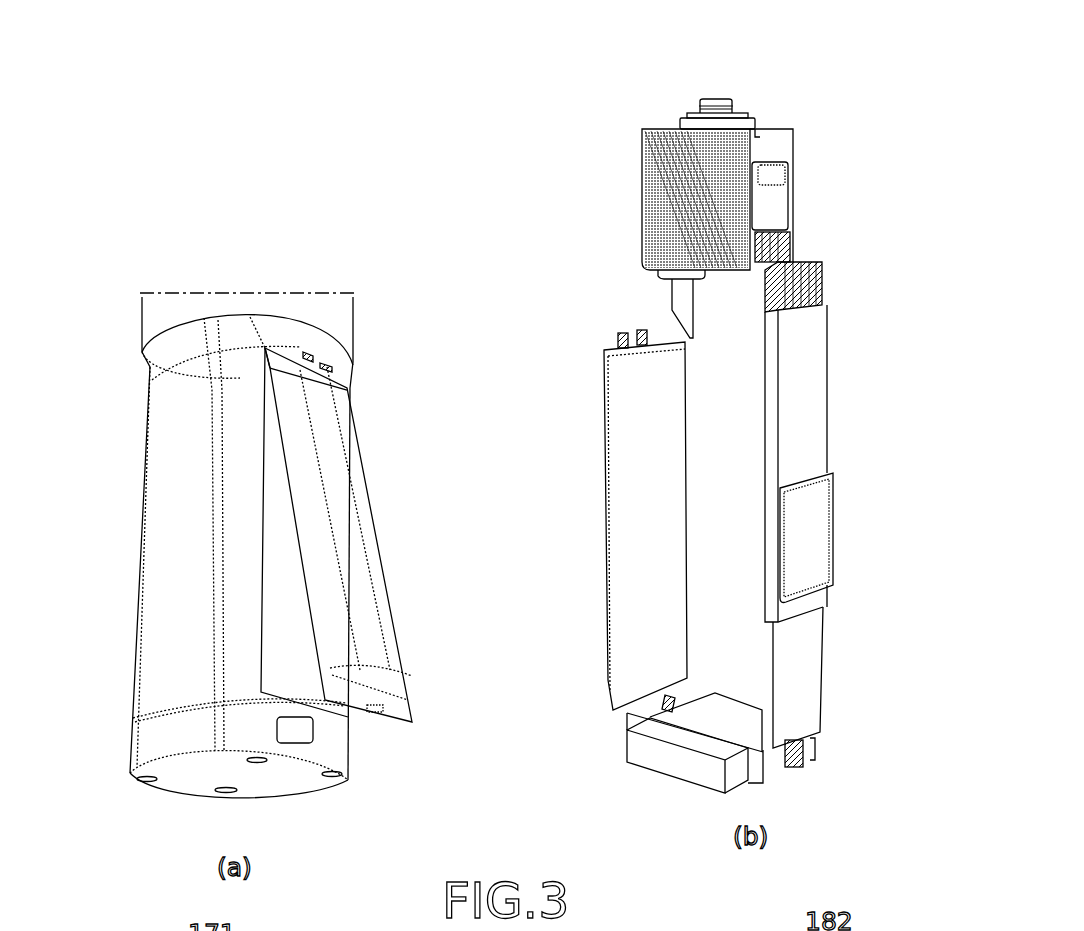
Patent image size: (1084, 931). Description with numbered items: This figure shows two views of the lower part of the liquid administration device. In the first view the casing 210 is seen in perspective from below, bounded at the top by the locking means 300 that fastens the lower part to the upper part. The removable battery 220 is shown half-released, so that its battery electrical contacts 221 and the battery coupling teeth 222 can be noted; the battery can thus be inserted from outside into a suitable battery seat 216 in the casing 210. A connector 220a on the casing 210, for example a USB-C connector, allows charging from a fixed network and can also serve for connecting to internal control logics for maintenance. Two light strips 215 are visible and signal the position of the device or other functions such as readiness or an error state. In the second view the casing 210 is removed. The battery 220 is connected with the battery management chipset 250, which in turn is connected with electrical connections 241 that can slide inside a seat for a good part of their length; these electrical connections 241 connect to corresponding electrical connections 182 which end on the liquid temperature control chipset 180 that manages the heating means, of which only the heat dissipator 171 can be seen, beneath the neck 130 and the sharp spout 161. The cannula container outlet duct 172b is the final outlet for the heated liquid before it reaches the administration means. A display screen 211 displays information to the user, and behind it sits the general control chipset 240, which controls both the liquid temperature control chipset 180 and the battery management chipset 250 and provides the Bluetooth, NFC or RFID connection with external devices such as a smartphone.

The neck of the upper part 130 is at (633, 196).
The sharp spout 161 is at (686, 303).
The heat dissipator 171 is at (658, 128).
The cannula container outlet duct 172b is at (735, 103).
The liquid temperature control chipset 180 is at (773, 205).
The electrical connections from the chipset 182 is at (792, 247).
The casing 210 is at (136, 455).
The display screen 211 is at (812, 535).
The light strips 215 is at (218, 560).
The battery seat 216 is at (283, 640).
The removable battery 220 is at (350, 503).
The connector 220a is at (297, 737).
The battery electrical contacts 221 is at (380, 716).
The battery coupling teeth 222 is at (328, 364).
The general control chipset 240 is at (798, 357).
The electrical connections 241 is at (800, 283).
The battery management chipset 250 is at (673, 786).
The locking means 300 is at (197, 300).